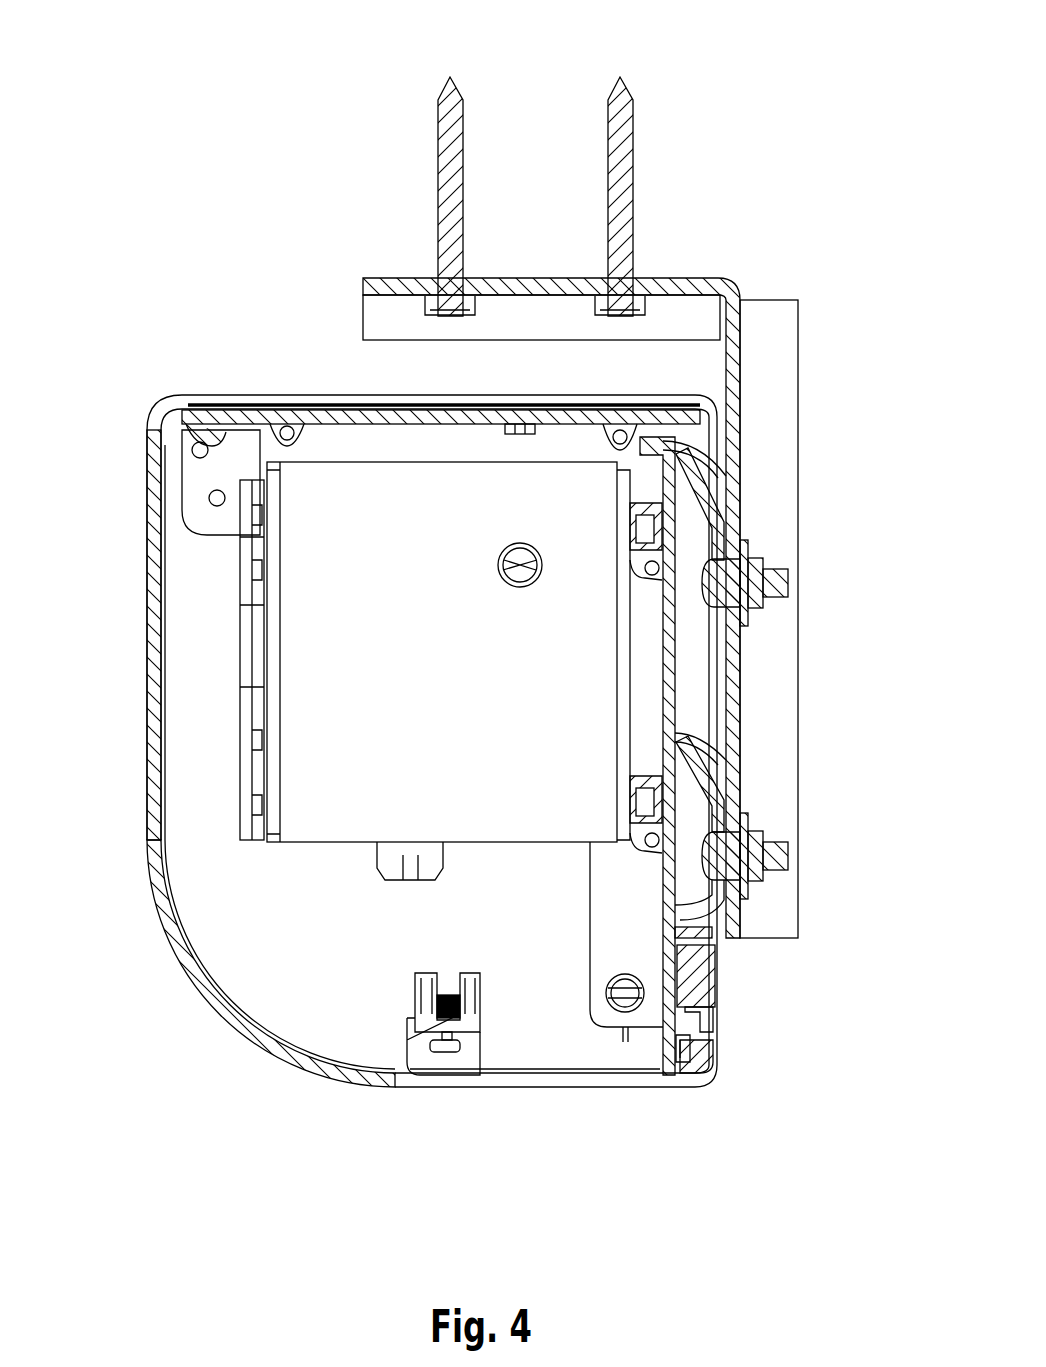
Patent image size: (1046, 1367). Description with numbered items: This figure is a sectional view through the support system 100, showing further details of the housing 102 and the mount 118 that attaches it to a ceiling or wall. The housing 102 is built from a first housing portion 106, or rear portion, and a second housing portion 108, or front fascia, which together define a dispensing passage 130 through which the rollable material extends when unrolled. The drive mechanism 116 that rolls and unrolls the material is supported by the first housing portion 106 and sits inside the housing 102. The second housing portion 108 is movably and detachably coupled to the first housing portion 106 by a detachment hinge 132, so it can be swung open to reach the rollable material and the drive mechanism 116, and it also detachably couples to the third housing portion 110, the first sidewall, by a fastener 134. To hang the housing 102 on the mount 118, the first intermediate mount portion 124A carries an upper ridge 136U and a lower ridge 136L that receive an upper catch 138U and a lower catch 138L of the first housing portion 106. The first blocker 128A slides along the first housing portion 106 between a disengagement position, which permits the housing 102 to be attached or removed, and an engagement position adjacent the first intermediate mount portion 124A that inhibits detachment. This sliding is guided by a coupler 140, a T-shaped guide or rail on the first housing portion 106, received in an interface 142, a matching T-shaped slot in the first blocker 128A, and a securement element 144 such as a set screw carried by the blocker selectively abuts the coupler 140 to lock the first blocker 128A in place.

The support system 100 is at (185, 128).
The housing 102 is at (140, 397).
The first housing portion 106 is at (658, 1055).
The second housing portion 108 is at (238, 1022).
The third housing portion 110 is at (510, 1090).
The drive mechanism 116 is at (262, 642).
The mount 118 is at (760, 267).
The first intermediate mount portion 124A is at (722, 658).
The first blocker 128A is at (715, 970).
The dispensing passage 130 is at (607, 1170).
The detachment hinge 132 is at (205, 438).
The fastener 134 is at (447, 1054).
The upper ridge 136U is at (706, 490).
The lower ridge 136L is at (706, 797).
The upper catch 138U is at (718, 460).
The lower catch 138L is at (708, 752).
The coupler 140 is at (672, 1052).
The interface 142 is at (700, 1008).
The securement element 144 is at (703, 1058).